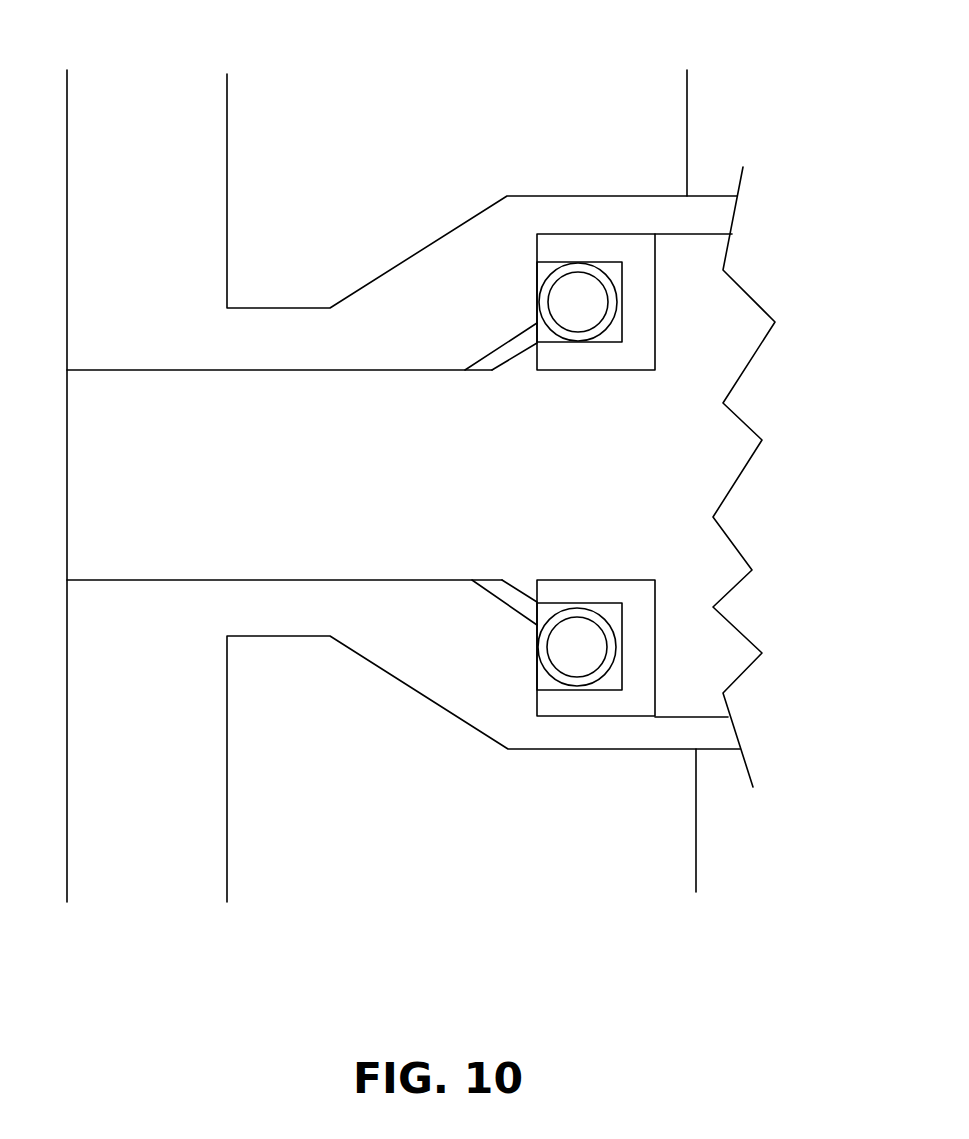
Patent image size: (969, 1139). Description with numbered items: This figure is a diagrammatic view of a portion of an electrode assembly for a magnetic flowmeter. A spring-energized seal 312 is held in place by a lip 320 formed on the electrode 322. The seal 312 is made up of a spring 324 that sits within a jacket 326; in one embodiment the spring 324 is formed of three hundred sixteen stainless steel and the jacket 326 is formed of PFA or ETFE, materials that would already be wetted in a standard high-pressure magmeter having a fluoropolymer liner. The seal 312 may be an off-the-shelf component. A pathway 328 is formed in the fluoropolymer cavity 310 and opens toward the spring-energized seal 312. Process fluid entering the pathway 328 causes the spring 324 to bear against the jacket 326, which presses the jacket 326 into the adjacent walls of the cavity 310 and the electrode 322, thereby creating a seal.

The fluoropolymer cavity 310 is at (418, 637).
The spring-energized seal 312 is at (660, 274).
The lip 320 is at (530, 345).
The electrode 322 is at (350, 502).
The spring 324 is at (558, 683).
The jacket 326 is at (635, 702).
The pathway 328 is at (522, 603).